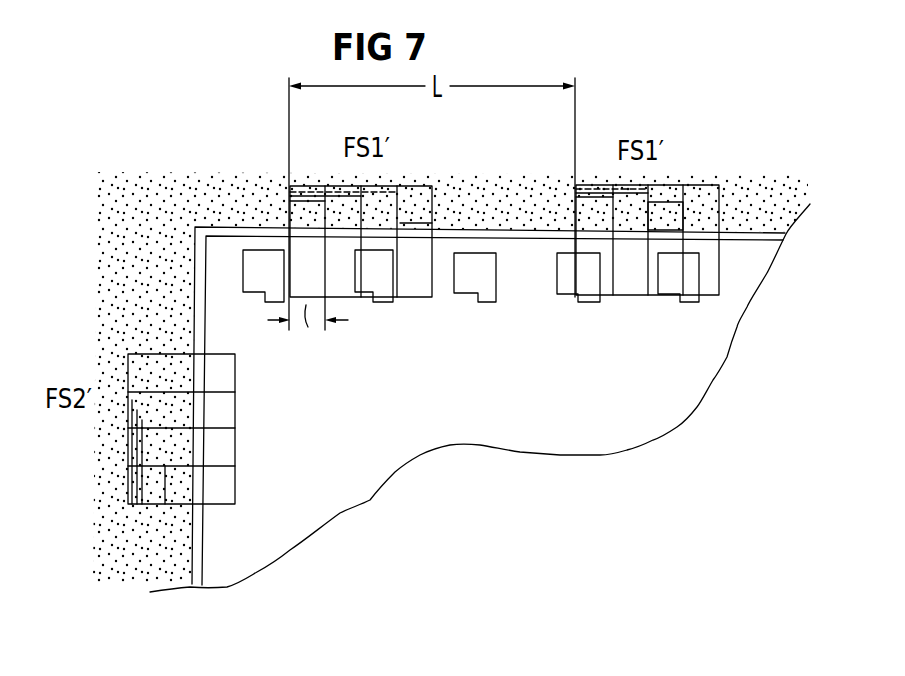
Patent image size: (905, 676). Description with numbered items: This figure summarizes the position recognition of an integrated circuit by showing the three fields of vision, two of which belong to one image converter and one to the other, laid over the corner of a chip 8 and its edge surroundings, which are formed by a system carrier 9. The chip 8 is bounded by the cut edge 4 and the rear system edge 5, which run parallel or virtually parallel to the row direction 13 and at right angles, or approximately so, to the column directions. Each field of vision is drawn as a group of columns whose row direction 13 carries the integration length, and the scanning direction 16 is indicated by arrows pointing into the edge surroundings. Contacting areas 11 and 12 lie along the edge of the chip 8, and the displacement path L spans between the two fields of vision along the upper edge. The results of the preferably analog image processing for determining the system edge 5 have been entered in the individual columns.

The cut edge 4 is at (190, 588).
The system edge 5 is at (203, 588).
The chip 8 is at (257, 550).
The system carrier 9 is at (235, 185).
The contacting area 11 is at (260, 285).
The contacting area 12 is at (472, 272).
The row direction 13 is at (302, 188).
The scanning direction 16 is at (503, 201).